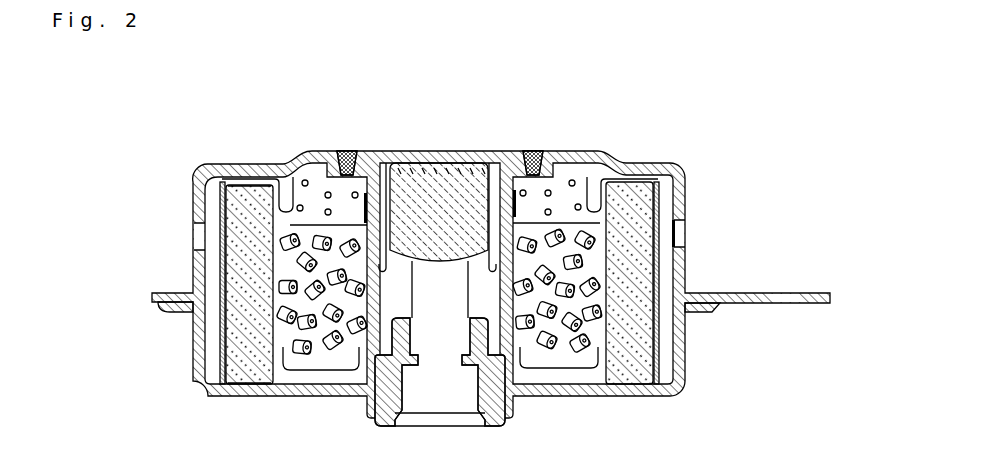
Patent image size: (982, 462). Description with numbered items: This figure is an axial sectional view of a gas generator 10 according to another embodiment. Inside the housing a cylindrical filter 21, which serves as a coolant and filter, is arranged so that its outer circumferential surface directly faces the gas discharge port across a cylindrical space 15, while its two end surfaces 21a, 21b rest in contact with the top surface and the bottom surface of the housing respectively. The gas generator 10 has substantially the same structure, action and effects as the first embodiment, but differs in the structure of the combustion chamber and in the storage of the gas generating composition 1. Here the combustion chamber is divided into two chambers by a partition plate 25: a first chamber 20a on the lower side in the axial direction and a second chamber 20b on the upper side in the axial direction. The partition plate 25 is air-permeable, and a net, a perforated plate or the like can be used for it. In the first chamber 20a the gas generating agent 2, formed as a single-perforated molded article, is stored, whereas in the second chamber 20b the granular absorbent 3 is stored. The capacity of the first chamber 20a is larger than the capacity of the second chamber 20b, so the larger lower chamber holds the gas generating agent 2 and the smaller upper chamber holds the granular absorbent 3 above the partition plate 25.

The gas generating composition 1 is at (565, 106).
The gas generating agent 2 is at (562, 240).
The granular absorbent 3 is at (528, 168).
The gas generator 10 is at (438, 131).
The cylindrical space 15 is at (210, 355).
The first chamber 20a is at (285, 262).
The second chamber 20b is at (320, 180).
The cylindrical filter 21 is at (240, 330).
The end surface of the cylindrical filter 21a is at (260, 172).
The end surface of the cylindrical filter 21b is at (248, 385).
The partition plate 25 is at (242, 205).